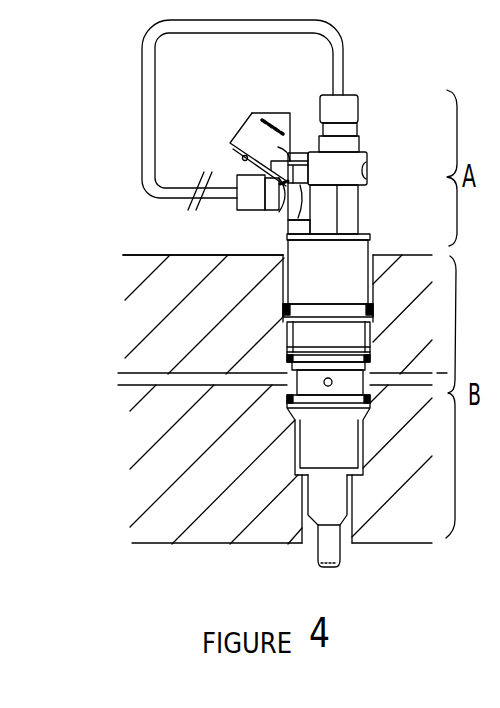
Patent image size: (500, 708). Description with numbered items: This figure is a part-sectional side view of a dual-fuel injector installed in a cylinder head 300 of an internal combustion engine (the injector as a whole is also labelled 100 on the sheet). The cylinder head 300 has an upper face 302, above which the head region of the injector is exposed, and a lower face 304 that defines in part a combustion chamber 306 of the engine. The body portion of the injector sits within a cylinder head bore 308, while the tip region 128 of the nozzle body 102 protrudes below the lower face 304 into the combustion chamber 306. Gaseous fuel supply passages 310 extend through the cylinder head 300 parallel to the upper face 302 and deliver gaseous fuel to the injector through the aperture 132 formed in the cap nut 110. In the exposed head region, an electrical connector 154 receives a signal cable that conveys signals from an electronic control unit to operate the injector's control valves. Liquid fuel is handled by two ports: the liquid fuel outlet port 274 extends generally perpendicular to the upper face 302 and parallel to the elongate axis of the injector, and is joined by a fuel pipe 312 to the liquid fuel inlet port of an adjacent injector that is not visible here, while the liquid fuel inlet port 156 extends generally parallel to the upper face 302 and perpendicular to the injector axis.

The fuel injector 100 is at (375, 182).
The nozzle body 102 is at (300, 552).
The cap nut 110 is at (348, 447).
The tip region 128 is at (342, 573).
The aperture 132 is at (333, 383).
The electrical connector 154 is at (248, 136).
The liquid fuel inlet port 156 is at (248, 200).
The liquid fuel outlet port 274 is at (343, 108).
The cylinder head 300 is at (137, 310).
The upper face 302 is at (178, 218).
The lower face 304 is at (403, 545).
The combustion chamber 306 is at (294, 604).
The cylinder head bore 308 is at (373, 282).
The gaseous fuel supply passages 310 is at (173, 383).
The fuel pipe 312 is at (148, 112).